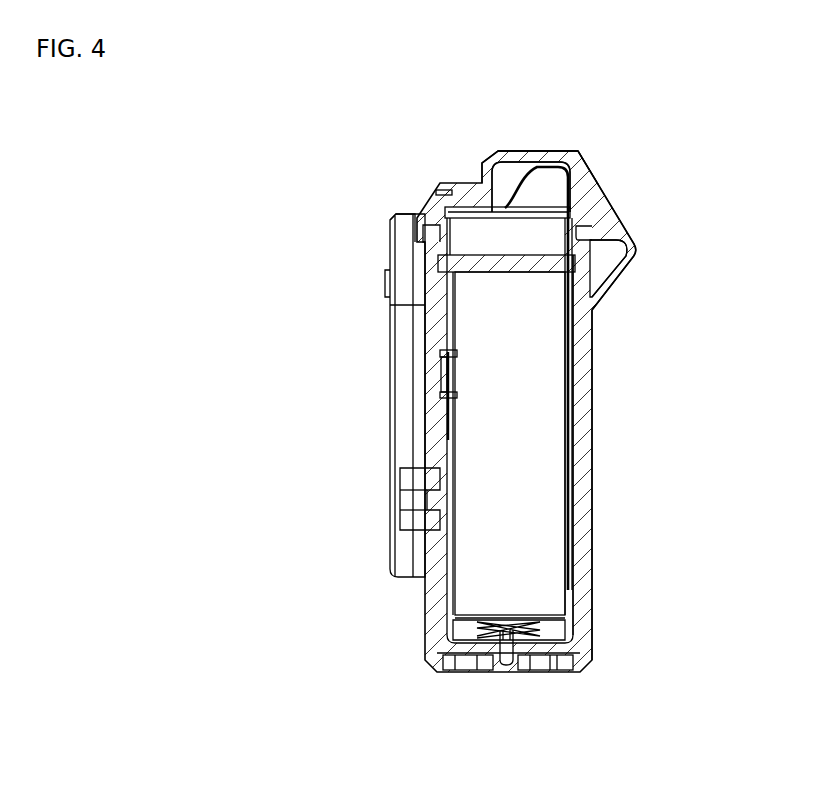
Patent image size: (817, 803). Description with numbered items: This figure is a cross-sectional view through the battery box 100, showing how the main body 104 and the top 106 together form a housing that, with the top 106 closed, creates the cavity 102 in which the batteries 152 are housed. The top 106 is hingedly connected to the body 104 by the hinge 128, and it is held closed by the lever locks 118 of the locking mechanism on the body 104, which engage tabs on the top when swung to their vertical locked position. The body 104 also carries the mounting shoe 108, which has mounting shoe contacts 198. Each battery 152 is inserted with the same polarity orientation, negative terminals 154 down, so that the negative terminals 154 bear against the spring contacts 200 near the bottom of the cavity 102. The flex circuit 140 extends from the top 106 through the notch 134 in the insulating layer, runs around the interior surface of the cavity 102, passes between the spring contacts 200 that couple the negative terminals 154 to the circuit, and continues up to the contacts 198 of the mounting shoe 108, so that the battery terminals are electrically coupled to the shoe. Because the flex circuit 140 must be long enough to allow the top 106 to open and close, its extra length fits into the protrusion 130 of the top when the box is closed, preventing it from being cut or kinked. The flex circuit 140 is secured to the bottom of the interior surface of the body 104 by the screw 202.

The battery box 100 is at (212, 297).
The cavity 102 is at (568, 287).
The main body 104 is at (590, 575).
The top 106 is at (603, 188).
The mounting shoe 108 is at (400, 373).
The lever locks 118 is at (405, 238).
The hinge 128 is at (615, 225).
The protrusion 130 is at (563, 157).
The notch 134 is at (502, 177).
The flex circuit 140 is at (523, 180).
The batteries 152 is at (510, 512).
The negative terminals 154 is at (548, 620).
The mounting shoe contacts 198 is at (432, 383).
The spring contacts 200 is at (470, 637).
The screw 202 is at (508, 663).